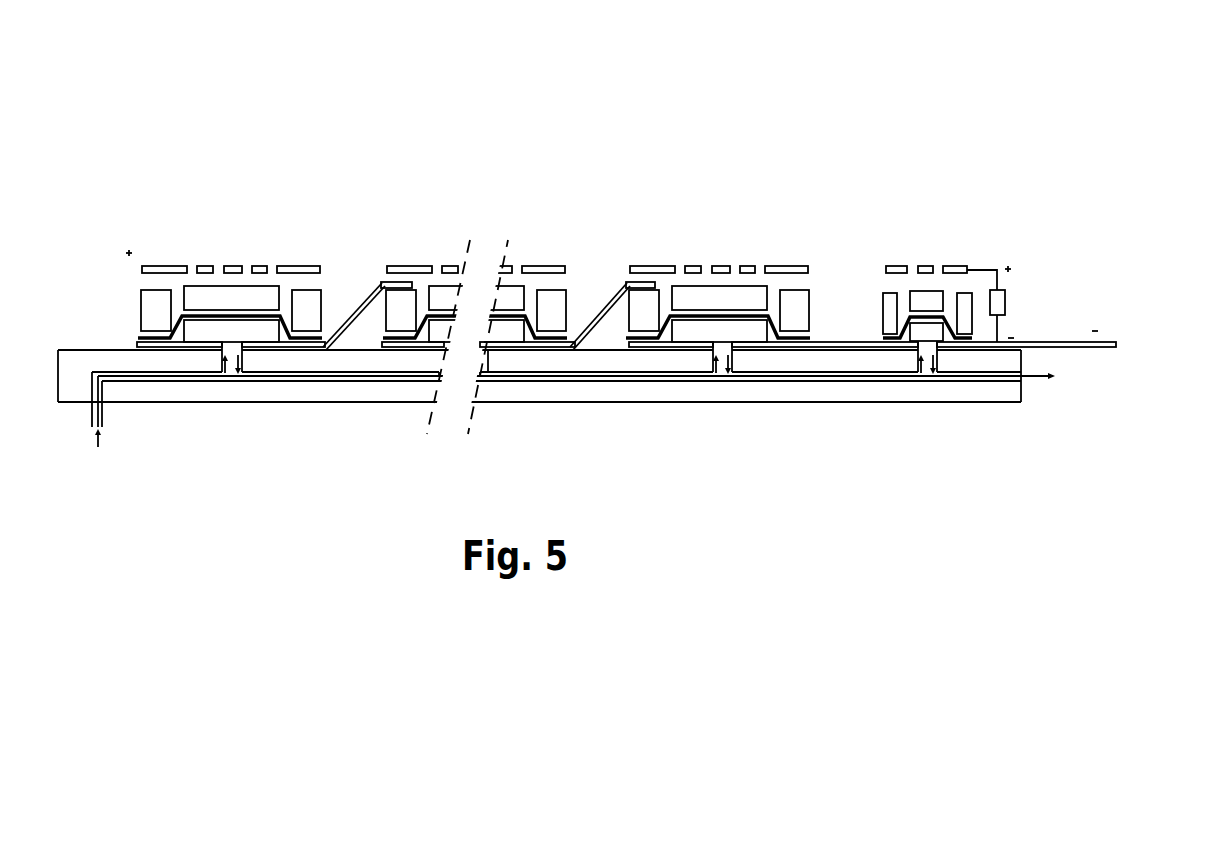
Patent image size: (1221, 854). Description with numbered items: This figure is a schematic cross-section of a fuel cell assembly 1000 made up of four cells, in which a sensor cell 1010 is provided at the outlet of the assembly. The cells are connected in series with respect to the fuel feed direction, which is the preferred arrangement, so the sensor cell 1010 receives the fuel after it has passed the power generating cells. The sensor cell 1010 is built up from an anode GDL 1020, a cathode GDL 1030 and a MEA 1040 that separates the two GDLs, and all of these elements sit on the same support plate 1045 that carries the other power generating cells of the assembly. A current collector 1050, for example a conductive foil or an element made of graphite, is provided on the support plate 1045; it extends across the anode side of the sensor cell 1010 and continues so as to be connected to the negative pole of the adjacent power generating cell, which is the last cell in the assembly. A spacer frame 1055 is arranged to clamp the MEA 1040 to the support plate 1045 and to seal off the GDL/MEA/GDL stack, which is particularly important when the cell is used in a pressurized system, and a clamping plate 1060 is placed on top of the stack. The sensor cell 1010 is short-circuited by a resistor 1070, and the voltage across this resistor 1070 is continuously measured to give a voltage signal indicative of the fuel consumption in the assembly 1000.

The fuel cell assembly 1000 is at (296, 162).
The sensor cell 1010 is at (930, 208).
The anode GDL 1020 is at (928, 328).
The cathode GDL 1030 is at (923, 305).
The MEA 1040 is at (945, 318).
The support plate 1045 is at (719, 393).
The current collector 1050 is at (1040, 346).
The spacer frame 1055 is at (888, 317).
The clamping plate 1060 is at (887, 270).
The resistor 1070 is at (1010, 298).